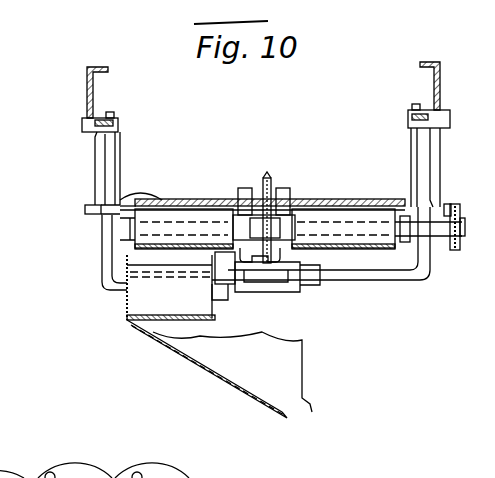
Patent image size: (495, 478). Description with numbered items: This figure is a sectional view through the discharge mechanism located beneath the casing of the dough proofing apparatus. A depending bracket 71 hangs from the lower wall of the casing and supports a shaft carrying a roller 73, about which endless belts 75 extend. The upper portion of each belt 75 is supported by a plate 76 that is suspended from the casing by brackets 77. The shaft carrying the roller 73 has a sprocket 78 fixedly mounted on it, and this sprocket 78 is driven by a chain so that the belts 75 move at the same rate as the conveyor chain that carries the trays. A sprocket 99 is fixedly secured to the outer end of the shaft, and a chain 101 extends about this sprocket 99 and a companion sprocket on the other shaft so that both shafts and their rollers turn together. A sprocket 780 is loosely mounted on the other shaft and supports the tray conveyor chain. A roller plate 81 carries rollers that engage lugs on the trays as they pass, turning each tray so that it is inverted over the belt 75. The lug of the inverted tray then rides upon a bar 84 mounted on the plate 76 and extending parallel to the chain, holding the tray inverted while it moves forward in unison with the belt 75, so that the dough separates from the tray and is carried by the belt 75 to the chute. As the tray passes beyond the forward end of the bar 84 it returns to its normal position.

The bracket 77 is at (96, 148).
The depending bracket 71 is at (108, 164).
The endless belt 75 is at (99, 194).
The plate 76 is at (90, 212).
The roller 73 is at (135, 226).
The bar 84 is at (240, 204).
The roller plate 81 is at (249, 188).
The sprocket 780 is at (269, 178).
The sprocket 78 is at (334, 208).
The chain 101 is at (456, 201).
The sprocket 99 is at (463, 227).